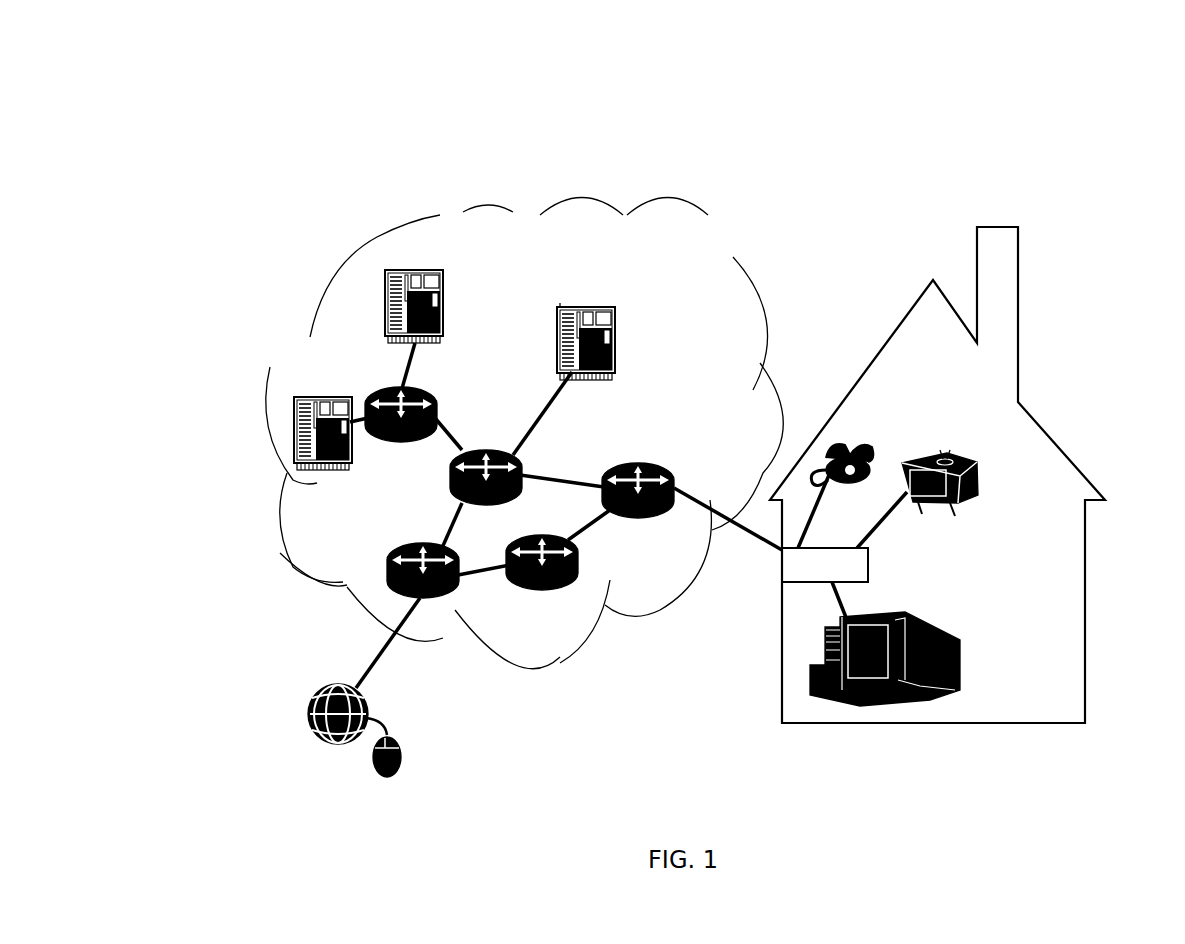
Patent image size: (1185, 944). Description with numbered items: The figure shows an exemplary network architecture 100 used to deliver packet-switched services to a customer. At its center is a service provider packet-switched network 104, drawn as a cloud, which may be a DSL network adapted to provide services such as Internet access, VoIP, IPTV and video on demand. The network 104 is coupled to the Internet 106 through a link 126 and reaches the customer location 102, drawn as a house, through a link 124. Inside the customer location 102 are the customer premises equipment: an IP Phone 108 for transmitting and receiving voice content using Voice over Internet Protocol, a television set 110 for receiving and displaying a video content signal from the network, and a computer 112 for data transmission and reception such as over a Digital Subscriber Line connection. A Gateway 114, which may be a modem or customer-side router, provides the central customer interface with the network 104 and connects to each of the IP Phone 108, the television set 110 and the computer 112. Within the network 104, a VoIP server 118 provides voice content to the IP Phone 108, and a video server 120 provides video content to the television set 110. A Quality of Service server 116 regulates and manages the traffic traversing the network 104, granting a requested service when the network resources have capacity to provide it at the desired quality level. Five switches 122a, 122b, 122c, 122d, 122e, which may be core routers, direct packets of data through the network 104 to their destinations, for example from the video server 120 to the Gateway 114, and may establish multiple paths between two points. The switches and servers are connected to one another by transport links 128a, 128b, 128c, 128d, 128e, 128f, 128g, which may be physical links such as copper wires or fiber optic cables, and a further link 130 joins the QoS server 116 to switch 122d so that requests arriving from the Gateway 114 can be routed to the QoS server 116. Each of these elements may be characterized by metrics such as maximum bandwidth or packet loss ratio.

The network architecture 100 is at (996, 122).
The customer location 102 is at (1040, 418).
The service provider packet-switched network 104 is at (597, 187).
The Internet 106 is at (307, 716).
The IP Phone 108 is at (838, 440).
The television set 110 is at (975, 497).
The computer 112 is at (898, 680).
The Gateway 114 is at (800, 578).
The QoS server 116 is at (612, 318).
The VoIP server 118 is at (393, 272).
The video server 120 is at (300, 407).
The switch 122a is at (632, 515).
The switch 122b is at (538, 573).
The switch 122c is at (393, 575).
The switch 122d is at (488, 497).
The switch 122e is at (393, 392).
The link 124 is at (752, 537).
The link 126 is at (385, 652).
The transport link 128a is at (572, 478).
The transport link 128b is at (597, 515).
The transport link 128c is at (478, 577).
The transport link 128d is at (452, 512).
The transport link 128e is at (455, 442).
The transport link 128f is at (415, 372).
The transport link 128g is at (358, 428).
The link 130 is at (542, 418).